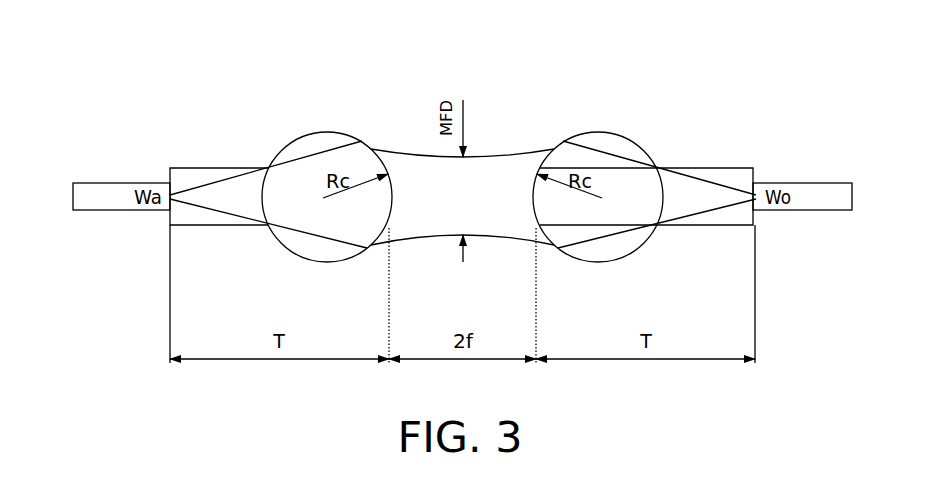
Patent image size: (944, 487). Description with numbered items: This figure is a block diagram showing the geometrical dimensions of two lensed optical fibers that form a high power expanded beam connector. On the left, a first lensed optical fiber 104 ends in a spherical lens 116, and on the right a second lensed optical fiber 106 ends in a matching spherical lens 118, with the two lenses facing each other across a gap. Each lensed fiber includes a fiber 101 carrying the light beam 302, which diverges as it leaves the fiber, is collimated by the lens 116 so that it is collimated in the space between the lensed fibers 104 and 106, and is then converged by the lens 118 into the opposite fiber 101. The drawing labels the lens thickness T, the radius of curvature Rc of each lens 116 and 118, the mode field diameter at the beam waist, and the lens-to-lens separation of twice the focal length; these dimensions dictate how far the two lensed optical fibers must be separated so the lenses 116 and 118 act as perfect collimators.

The fiber 101 is at (103, 180).
The first lensed optical fiber 104 is at (223, 62).
The second lensed optical fiber 106 is at (702, 60).
The lens 116 is at (323, 134).
The lens 118 is at (600, 134).
The light beam 302 is at (237, 183).